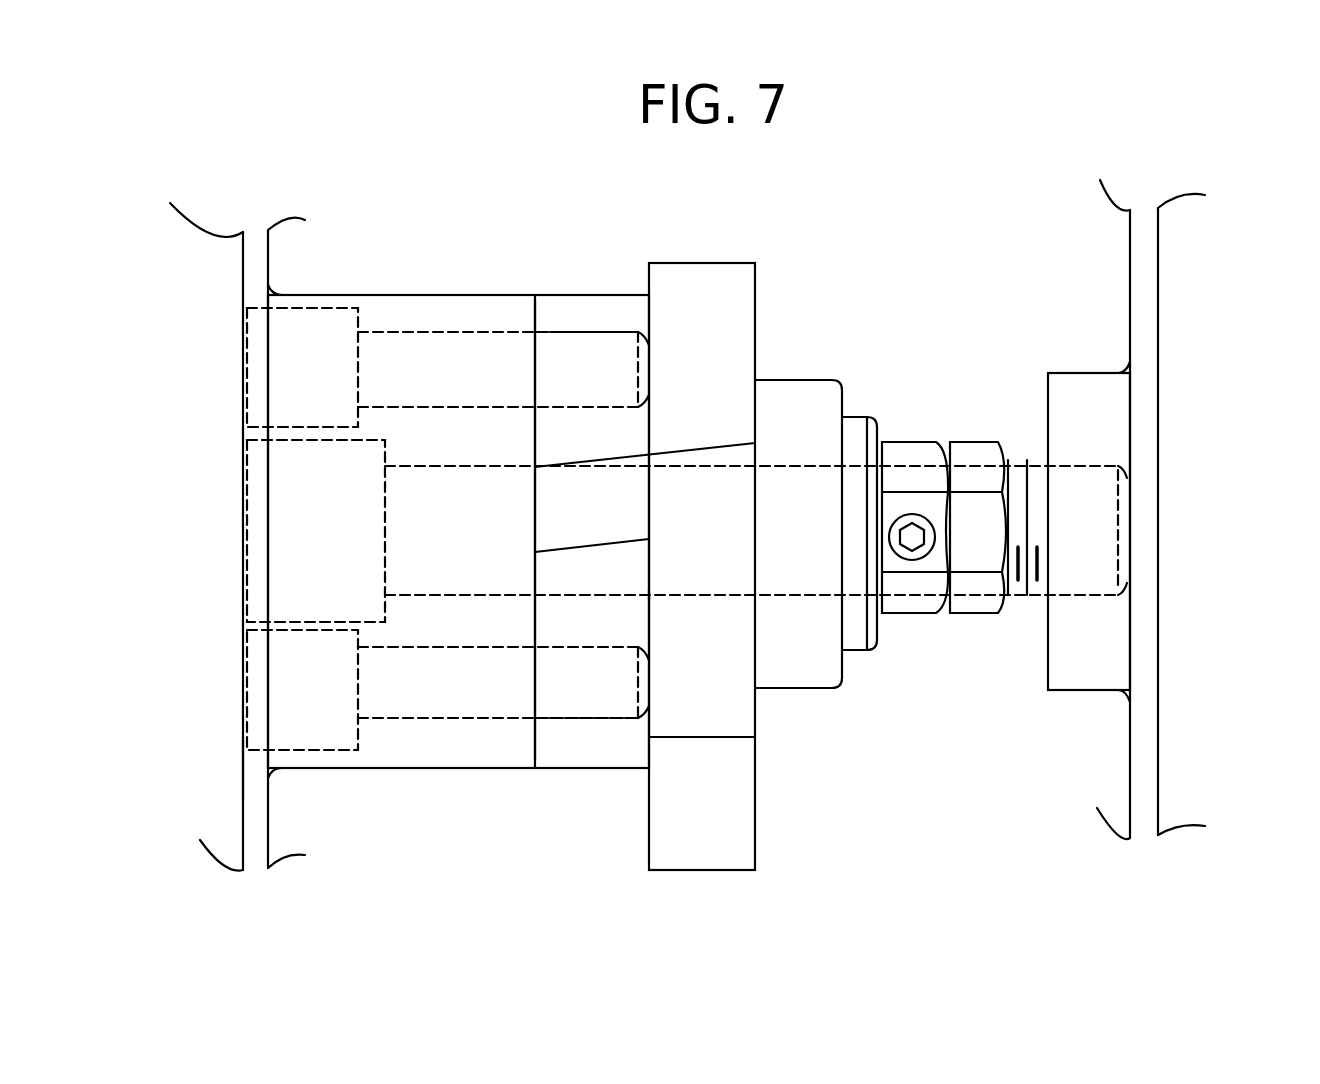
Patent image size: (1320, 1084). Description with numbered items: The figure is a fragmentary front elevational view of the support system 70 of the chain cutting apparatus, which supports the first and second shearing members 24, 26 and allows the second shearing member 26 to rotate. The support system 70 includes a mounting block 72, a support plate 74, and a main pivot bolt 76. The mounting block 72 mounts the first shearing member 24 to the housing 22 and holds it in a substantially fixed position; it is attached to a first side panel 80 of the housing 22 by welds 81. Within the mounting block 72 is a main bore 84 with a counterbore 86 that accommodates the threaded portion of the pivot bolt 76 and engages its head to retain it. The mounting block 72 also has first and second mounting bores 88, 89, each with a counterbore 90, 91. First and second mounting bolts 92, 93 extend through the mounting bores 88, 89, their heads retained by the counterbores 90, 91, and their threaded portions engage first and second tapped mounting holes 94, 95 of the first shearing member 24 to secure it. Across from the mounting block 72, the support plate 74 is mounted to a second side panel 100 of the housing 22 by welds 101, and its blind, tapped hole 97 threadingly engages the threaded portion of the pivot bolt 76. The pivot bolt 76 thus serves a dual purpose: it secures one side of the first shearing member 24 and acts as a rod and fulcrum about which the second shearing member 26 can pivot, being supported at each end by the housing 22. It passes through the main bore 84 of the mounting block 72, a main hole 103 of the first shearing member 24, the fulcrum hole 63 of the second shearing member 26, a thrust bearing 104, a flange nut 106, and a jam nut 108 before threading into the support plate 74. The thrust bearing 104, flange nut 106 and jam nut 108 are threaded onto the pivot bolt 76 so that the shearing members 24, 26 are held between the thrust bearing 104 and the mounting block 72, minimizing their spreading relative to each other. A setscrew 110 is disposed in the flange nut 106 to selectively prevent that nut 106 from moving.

The support system 70 is at (428, 270).
The housing 22 is at (252, 253).
The welds 81 is at (272, 292).
The mounting block 72 is at (402, 433).
The first shearing member 24 is at (622, 310).
The first mounting bore 88 is at (383, 362).
The counterbore 90 is at (287, 372).
The first tapped mounting hole 94 is at (555, 330).
The first mounting bolt 92 is at (585, 355).
The main bore 84 is at (413, 520).
The counterbore 86 is at (297, 555).
The second mounting bore 89 is at (385, 670).
The counterbore 91 is at (288, 730).
The first side panel 80 is at (257, 768).
The second mounting bolt 93 is at (563, 718).
The second tapped mounting hole 95 is at (603, 722).
The second shearing member 26 is at (705, 280).
The fulcrum hole 63 is at (715, 597).
The main hole 103 is at (625, 596).
The thrust bearing 104 is at (787, 385).
The flange nut 106 is at (909, 452).
The setscrew 110 is at (912, 545).
The jam nut 108 is at (980, 448).
The main pivot bolt 76 is at (1027, 595).
The support plate 74 is at (1103, 415).
The blind tapped hole 97 is at (1082, 595).
The welds 101 is at (1123, 368).
The second side panel 100 is at (1143, 733).